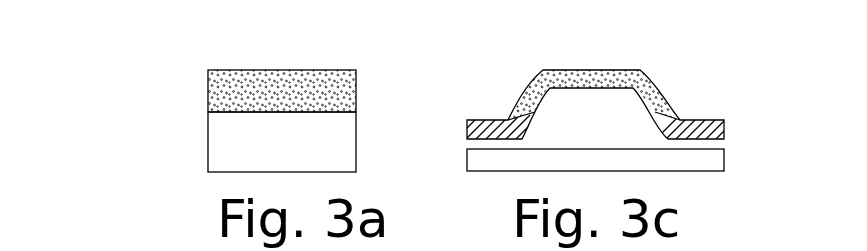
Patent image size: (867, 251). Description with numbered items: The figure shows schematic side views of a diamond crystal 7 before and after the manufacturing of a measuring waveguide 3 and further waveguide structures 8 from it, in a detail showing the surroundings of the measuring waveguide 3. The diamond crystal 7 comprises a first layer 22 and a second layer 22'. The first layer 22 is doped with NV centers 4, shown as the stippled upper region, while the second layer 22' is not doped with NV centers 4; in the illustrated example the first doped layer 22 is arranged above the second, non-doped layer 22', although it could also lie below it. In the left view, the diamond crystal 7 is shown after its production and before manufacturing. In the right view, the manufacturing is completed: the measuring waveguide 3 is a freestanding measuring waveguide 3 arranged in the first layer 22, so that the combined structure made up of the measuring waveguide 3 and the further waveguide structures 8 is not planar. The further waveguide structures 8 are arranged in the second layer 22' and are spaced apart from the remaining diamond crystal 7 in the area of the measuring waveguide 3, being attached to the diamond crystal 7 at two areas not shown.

In FIG. 3C, the measuring waveguide 3 is at (643, 72).
In FIG. 3A, the NV centers 4 is at (247, 70).
In FIG. 3C, the NV centers 4 is at (580, 70).
In FIG. 3A, the diamond crystal 7 is at (190, 91).
In FIG. 3C, the diamond crystal 7 is at (595, 91).
In FIG. 3C, the further waveguide structures 8 is at (597, 91).
In FIG. 3A, the first layer 22 is at (233, 61).
In FIG. 3C, the first layer 22 is at (556, 75).
In FIG. 3A, the second layer 22' is at (233, 135).
In FIG. 3C, the second layer 22' is at (548, 139).